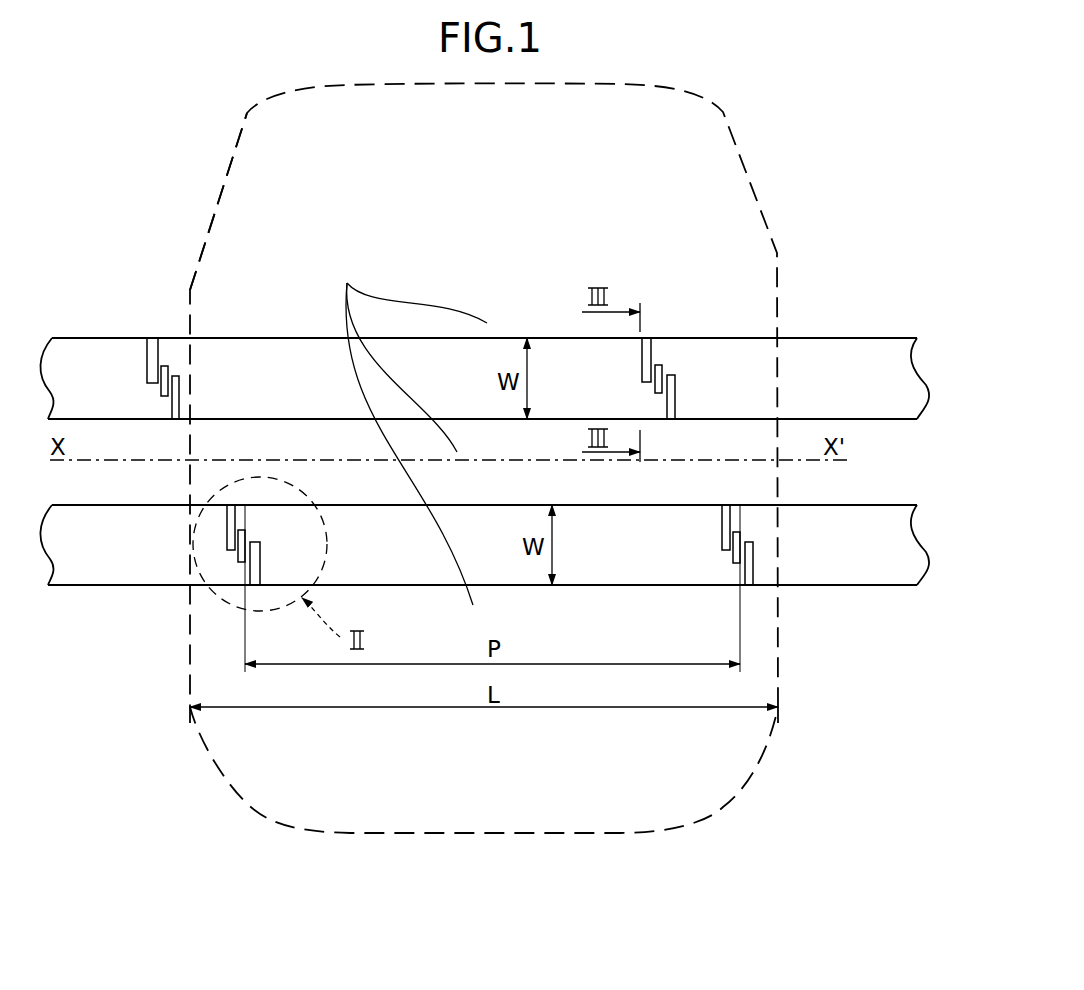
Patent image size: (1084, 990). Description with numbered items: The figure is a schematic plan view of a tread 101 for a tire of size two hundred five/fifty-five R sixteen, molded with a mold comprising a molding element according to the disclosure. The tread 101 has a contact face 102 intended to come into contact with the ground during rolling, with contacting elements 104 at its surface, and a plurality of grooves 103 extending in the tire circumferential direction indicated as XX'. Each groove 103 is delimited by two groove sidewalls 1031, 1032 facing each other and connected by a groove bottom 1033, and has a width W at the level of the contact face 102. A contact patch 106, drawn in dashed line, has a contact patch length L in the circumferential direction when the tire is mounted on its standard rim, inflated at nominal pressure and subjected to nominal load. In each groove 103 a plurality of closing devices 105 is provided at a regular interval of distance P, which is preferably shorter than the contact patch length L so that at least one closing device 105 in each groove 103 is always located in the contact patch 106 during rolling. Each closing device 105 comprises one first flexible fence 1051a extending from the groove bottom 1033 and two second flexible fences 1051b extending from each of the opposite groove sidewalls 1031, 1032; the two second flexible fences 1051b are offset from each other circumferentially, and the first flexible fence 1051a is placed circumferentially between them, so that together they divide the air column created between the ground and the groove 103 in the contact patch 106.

The tread 101 is at (735, 208).
The contact face 102 is at (281, 317).
The groove 103 is at (503, 460).
The groove sidewall 1031 is at (797, 338).
The groove sidewall 1032 is at (325, 419).
The groove bottom 1033 is at (472, 377).
The contacting element 104 is at (407, 431).
The closing device 105 is at (480, 473).
The first flexible fence 1051a is at (162, 383).
The second flexible fence 1051b is at (160, 355).
The contact patch 106 is at (207, 180).